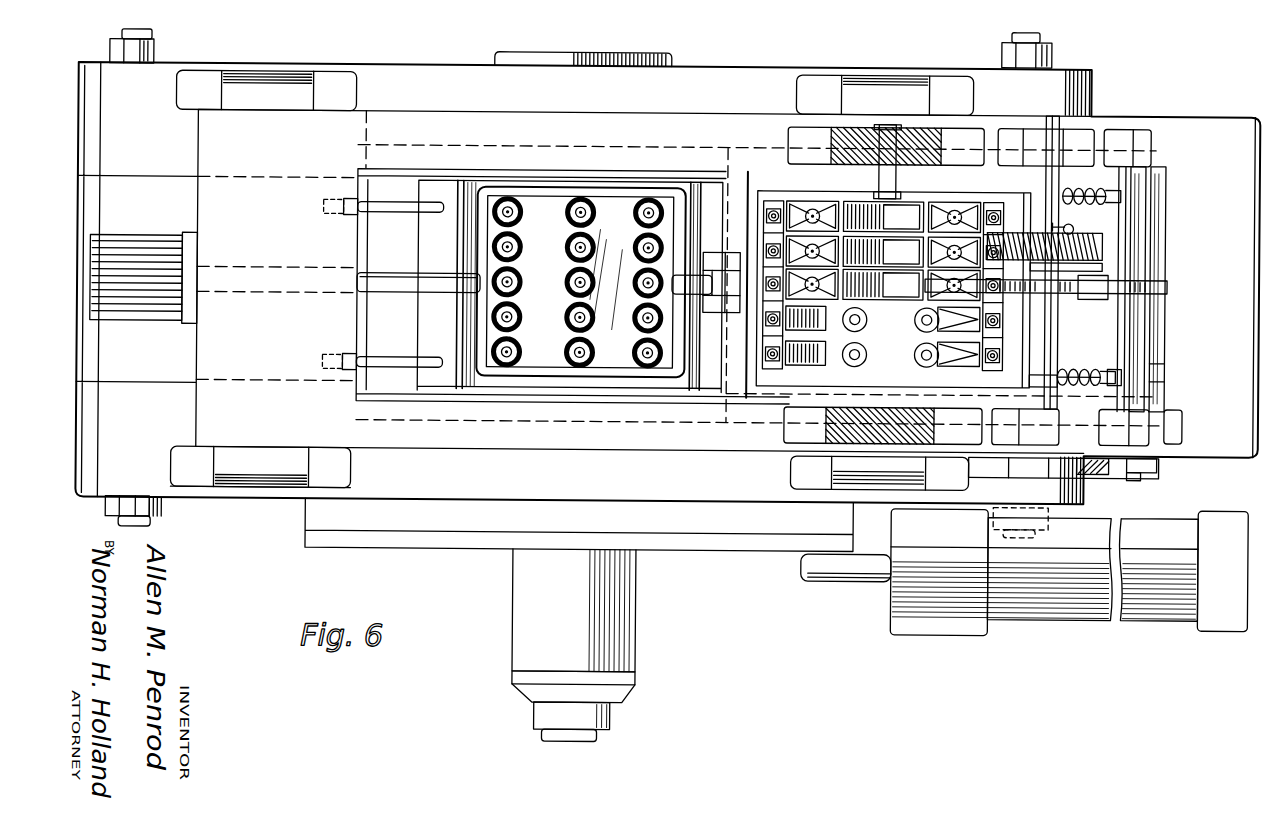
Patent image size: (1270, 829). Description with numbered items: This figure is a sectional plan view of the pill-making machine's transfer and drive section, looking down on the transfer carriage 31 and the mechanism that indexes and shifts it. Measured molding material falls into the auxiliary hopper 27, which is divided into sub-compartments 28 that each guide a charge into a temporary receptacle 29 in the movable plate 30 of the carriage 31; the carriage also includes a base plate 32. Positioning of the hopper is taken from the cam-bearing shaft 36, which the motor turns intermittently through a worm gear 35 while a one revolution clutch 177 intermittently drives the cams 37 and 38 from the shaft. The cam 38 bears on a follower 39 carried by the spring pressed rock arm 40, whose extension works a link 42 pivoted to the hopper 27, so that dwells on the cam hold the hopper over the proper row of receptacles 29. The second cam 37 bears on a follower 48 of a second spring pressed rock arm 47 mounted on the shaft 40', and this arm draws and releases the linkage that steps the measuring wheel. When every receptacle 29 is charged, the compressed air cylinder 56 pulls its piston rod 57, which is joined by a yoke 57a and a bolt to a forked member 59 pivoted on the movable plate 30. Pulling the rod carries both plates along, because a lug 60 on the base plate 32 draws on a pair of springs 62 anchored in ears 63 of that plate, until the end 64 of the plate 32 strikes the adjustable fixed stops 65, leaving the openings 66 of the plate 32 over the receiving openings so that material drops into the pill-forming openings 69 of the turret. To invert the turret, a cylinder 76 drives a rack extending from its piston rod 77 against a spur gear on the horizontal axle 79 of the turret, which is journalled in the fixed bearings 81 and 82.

The fixed bearing 82 is at (440, 52).
The compressed air cylinder 56 is at (143, 240).
The end of the plate 64 is at (732, 378).
The yoke 57a is at (540, 196).
The pill-forming openings 69 is at (568, 352).
The piston rod 57 is at (390, 277).
The forked member 59 is at (737, 314).
The adjustable fixed stops 65 is at (384, 215).
The transfer carriage 31 is at (760, 398).
The movable plate 30 is at (762, 370).
The base plate 32 is at (785, 396).
The receptacles 29 is at (815, 292).
The sub-compartments 28 is at (883, 250).
The auxiliary hopper 27 is at (878, 313).
The openings 66 is at (916, 356).
The cam-bearing shaft 36 is at (1050, 330).
The worm gear 35 is at (1100, 247).
The one revolution clutch 177 is at (1073, 229).
The link 42 is at (1097, 278).
The follower 39 is at (1160, 290).
The cam 38 is at (1085, 293).
The rock arm 40 is at (1095, 288).
The shaft 40' is at (1175, 370).
The springs 62 is at (1122, 192).
The ears 63 is at (1115, 372).
The lug 60 is at (1030, 379).
The cam 37 is at (985, 466).
The follower 48 is at (1088, 466).
The rock arm 47 is at (1133, 462).
The fixed bearing 81 is at (220, 498).
The piston rod 77 is at (850, 582).
The cylinder 76 is at (1165, 620).
The horizontal axle 79 is at (603, 740).